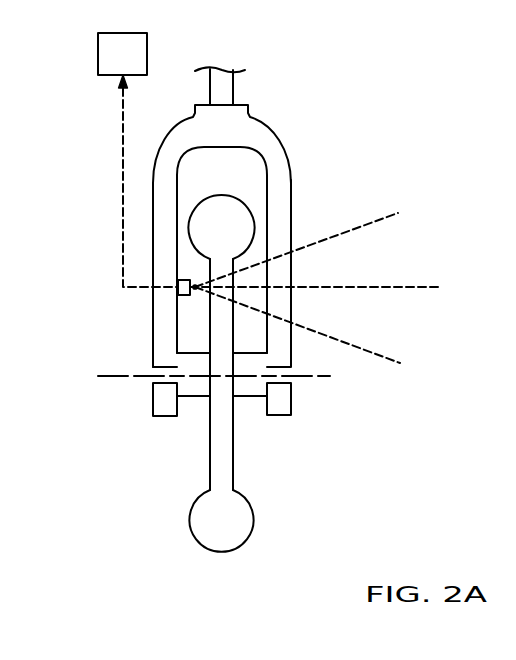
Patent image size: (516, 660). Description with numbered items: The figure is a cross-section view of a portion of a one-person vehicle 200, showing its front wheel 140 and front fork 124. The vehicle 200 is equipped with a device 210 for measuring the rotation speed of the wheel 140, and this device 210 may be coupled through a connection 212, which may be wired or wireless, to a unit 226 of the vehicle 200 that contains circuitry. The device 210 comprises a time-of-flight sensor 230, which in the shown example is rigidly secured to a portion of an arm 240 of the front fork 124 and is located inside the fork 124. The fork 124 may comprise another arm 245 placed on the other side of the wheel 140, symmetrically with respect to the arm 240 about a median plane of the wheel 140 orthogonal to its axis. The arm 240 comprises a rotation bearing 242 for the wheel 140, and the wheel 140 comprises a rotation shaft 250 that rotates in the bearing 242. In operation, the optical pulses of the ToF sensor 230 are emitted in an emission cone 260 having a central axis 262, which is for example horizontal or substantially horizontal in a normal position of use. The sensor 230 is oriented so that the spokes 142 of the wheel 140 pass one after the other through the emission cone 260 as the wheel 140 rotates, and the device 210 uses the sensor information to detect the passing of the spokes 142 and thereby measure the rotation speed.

The one-person vehicle 200 is at (250, 296).
The unit 226 is at (141, 49).
The connection 212 is at (121, 188).
The front fork 124 is at (290, 142).
The arm 245 is at (285, 209).
The arm 240 is at (165, 237).
The time-of-flight sensor 230 is at (180, 293).
The device 210 is at (183, 305).
The emission cone 260 is at (375, 218).
The central axis 262 is at (413, 287).
The rotation bearing 242 is at (158, 394).
The rotation shaft 250 is at (305, 376).
The spokes 142 is at (218, 467).
The front wheel 140 is at (248, 452).